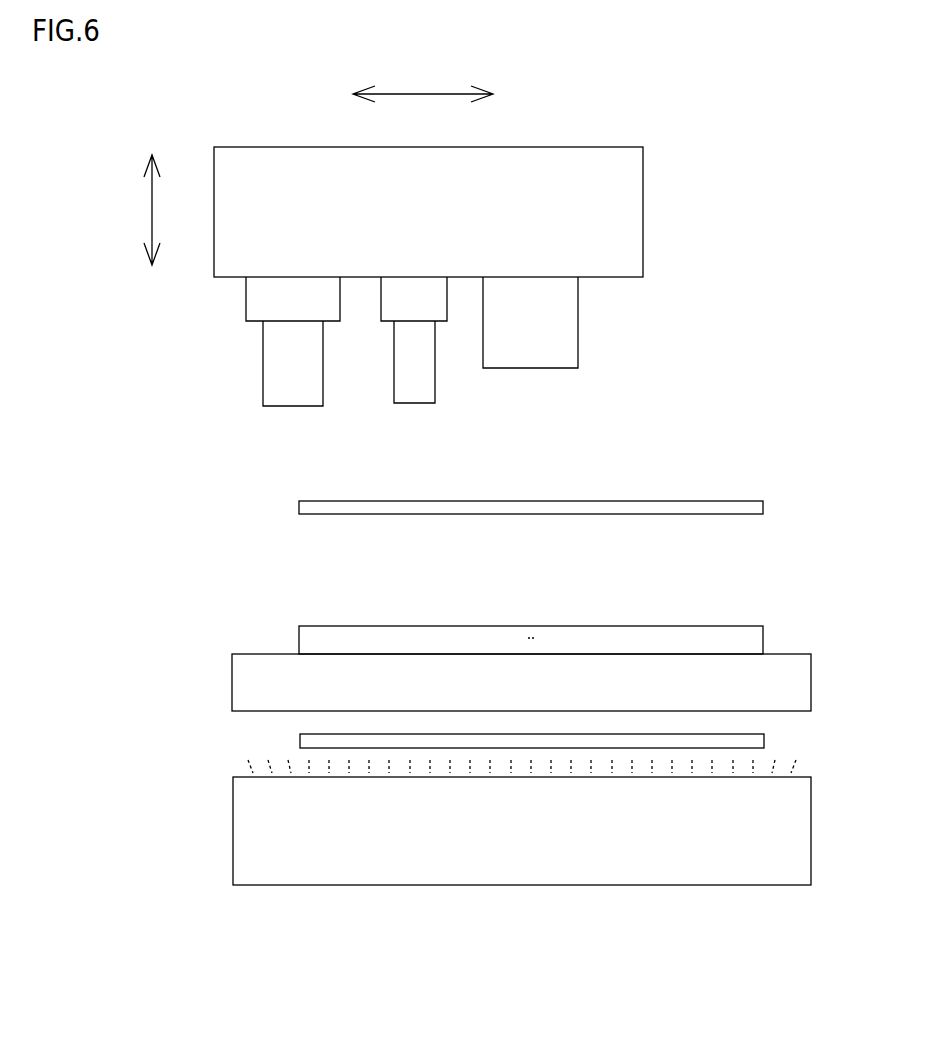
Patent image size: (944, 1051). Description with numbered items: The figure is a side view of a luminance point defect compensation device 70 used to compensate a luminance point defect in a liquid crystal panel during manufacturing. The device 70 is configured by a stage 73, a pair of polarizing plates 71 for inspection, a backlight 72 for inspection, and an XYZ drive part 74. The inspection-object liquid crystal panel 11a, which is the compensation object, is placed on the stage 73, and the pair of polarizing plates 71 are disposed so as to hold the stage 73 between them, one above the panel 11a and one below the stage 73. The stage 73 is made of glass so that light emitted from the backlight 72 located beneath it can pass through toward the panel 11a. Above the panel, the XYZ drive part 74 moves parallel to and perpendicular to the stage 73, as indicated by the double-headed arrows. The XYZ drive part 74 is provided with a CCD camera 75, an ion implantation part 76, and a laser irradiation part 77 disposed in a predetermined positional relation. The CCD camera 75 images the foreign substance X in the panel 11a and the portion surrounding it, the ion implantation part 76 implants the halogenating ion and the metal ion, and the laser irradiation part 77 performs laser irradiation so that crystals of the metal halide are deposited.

The luminance point defect compensation device 70 is at (149, 611).
The polarizing plate for inspection 71 is at (742, 505).
The backlight for inspection 72 is at (334, 866).
The stage 73 is at (242, 674).
The XYZ drive part 74 is at (565, 168).
The CCD camera 75 is at (565, 330).
The ion implantation part 76 is at (404, 376).
The laser irradiation part 77 is at (278, 363).
The inspection-object liquid crystal panel 11a is at (743, 633).
The foreign substance X is at (531, 637).